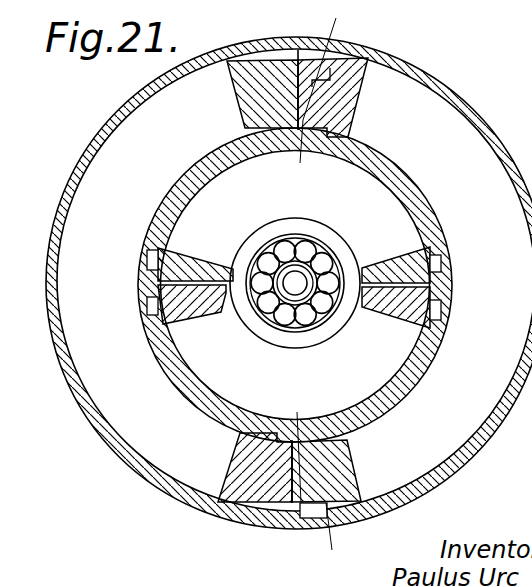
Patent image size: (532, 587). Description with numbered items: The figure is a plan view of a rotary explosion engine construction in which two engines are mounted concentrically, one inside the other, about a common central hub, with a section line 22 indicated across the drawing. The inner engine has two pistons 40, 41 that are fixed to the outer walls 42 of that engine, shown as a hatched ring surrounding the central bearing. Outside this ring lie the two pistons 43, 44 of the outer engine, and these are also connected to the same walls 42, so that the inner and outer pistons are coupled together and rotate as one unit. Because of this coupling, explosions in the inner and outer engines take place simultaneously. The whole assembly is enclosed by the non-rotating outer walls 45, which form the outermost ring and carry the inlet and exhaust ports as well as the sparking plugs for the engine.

The section line 22- 22 is at (318, 25).
The piston of the inner engine 40 is at (210, 262).
The piston of the inner engine 41 is at (193, 305).
The outer walls of the inner engine 42 is at (400, 183).
The piston of the outer engine 43 is at (335, 110).
The piston of the outer engine 44 is at (250, 105).
The non-rotating outer walls 45 is at (108, 445).